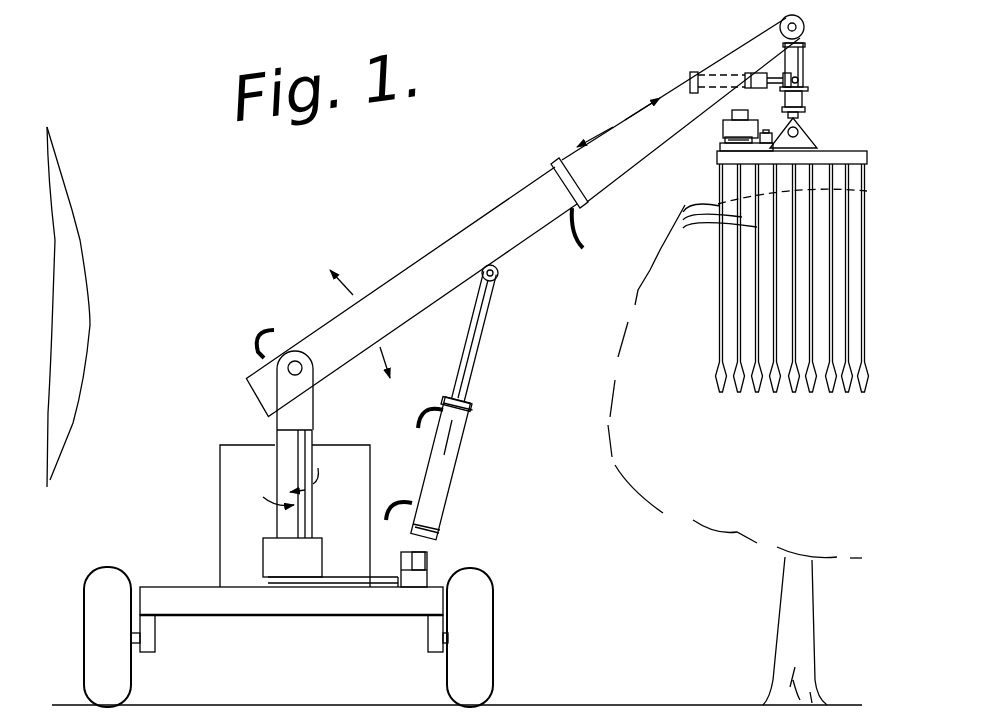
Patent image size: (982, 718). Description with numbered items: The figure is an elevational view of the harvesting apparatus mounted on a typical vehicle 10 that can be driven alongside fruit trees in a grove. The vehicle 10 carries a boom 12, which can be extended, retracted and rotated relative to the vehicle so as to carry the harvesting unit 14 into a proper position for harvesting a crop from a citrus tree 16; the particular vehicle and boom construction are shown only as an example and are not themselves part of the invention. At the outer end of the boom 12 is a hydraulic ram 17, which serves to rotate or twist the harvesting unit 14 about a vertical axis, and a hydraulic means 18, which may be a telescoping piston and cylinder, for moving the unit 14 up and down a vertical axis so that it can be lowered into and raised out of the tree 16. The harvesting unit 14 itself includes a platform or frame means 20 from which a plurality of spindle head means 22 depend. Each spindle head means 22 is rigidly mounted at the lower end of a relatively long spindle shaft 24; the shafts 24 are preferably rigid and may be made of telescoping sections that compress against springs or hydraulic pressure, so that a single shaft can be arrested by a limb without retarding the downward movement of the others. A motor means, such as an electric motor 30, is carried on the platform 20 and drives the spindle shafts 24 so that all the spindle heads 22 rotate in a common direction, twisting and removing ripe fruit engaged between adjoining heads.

The vehicle 10 is at (154, 522).
The boom 12 is at (458, 248).
The harvesting unit 14 is at (646, 272).
The citrus tree 16 is at (69, 305).
The hydraulic ram 17 is at (743, 77).
The hydraulic means 18 is at (801, 58).
The platform or frame means 20 is at (717, 157).
The spindle head means 22 is at (773, 400).
The spindle shaft 24 is at (703, 213).
The electric motor 30 is at (723, 124).